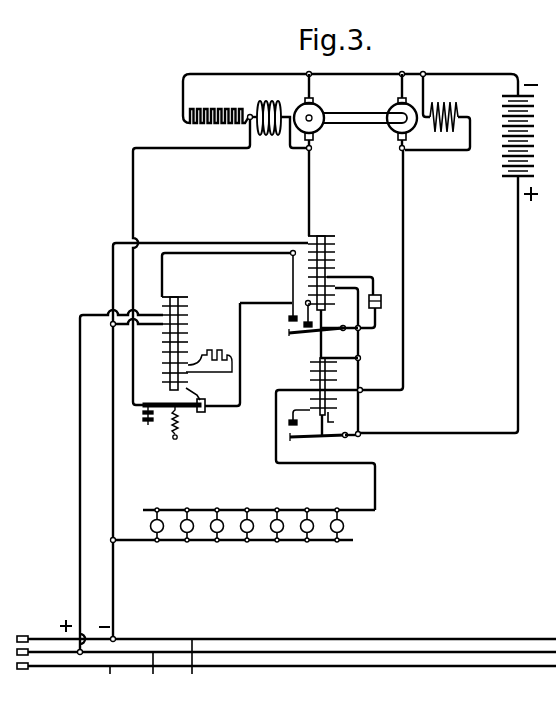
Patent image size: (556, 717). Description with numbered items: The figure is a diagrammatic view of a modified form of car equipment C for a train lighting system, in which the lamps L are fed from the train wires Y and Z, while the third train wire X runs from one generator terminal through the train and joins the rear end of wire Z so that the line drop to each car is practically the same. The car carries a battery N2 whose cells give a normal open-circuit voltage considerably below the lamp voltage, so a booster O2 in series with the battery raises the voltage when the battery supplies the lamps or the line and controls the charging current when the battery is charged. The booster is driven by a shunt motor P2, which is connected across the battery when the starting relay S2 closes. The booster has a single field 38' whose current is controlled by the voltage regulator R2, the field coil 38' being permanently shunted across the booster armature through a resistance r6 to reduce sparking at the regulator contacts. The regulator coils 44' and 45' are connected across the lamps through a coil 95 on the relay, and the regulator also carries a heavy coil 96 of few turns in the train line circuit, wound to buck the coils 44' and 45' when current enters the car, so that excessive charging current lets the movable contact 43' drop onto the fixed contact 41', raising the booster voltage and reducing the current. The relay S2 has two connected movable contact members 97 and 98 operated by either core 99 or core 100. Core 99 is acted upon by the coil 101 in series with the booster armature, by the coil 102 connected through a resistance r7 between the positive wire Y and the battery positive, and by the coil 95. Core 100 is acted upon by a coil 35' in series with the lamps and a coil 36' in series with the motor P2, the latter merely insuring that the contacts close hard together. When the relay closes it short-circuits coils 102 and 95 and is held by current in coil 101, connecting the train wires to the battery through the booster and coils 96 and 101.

The resistance r6 is at (215, 98).
The field coil 38' is at (279, 130).
The booster O2 is at (314, 110).
The shunt motor P2 is at (370, 111).
The battery N2 is at (449, 259).
The coil 101 is at (330, 236).
The core 99 is at (337, 250).
The coil 102 is at (337, 264).
The coil 95 is at (293, 289).
The movable contact member 98 is at (288, 331).
The starting relay S2 is at (310, 342).
The coil 35' is at (302, 396).
The coil 36' is at (274, 419).
The core 100 is at (342, 422).
The movable contact member 97 is at (297, 438).
The resistance r7 is at (383, 301).
The coil 96 is at (181, 297).
The coil 44' is at (161, 343).
The coil 45' is at (161, 380).
The voltage regulator R2 is at (191, 369).
The fixed contact 41' is at (140, 432).
The movable contact 43' is at (173, 437).
The lamps L is at (245, 540).
The car equipment C is at (286, 643).
The train wire x is at (104, 680).
The train wire Y is at (149, 674).
The train wire Z is at (190, 667).